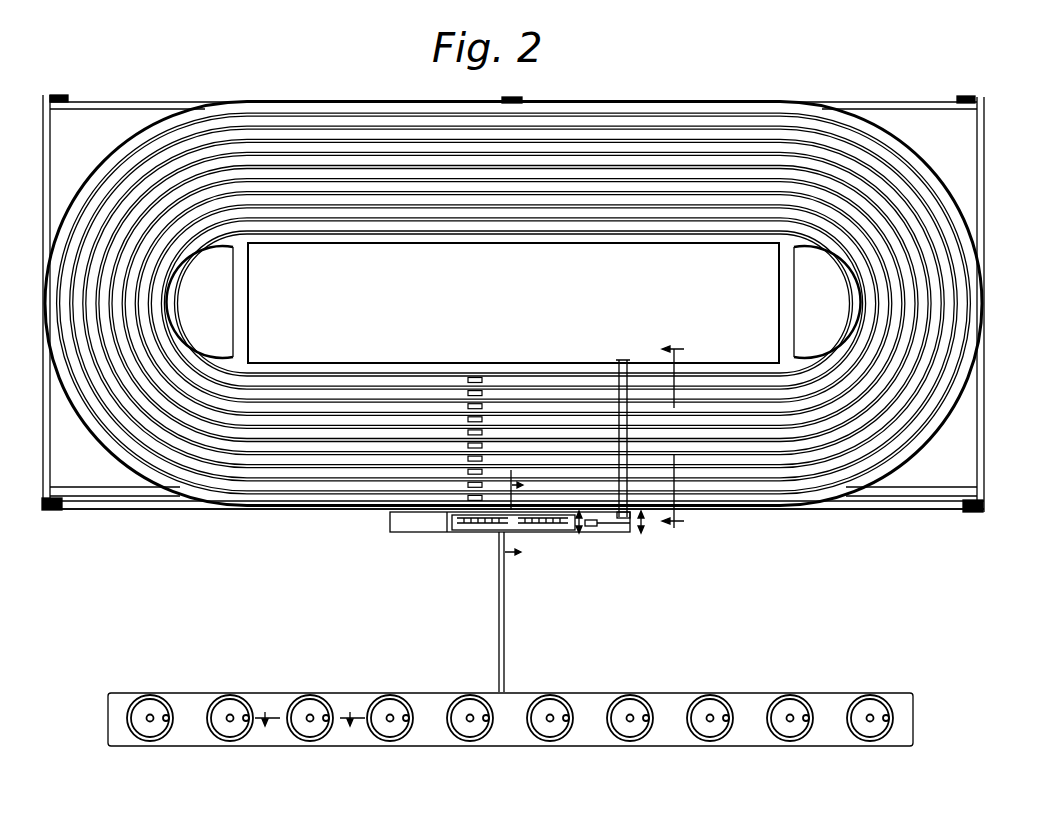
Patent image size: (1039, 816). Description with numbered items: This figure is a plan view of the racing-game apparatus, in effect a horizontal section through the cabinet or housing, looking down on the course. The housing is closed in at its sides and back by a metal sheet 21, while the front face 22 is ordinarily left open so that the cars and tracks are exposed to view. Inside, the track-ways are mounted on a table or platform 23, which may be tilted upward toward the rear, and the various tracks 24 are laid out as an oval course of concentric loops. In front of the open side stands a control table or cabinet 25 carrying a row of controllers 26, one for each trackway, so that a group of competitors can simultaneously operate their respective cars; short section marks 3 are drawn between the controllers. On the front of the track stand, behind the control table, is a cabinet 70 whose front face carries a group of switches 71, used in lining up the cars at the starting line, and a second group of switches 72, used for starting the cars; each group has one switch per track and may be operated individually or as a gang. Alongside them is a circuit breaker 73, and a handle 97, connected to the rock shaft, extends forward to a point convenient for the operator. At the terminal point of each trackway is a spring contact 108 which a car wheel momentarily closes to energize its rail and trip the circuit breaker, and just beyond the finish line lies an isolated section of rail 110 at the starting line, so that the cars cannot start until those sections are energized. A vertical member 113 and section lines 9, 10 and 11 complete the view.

The metal sheet 21 is at (726, 101).
The front face 22 is at (925, 508).
The table or platform 23 is at (360, 208).
The tracks 24 is at (500, 204).
The control table or cabinet 25 is at (662, 705).
The controllers 26 is at (152, 705).
The section line 3 is at (310, 711).
The section line 9 is at (612, 534).
The section line 10 is at (511, 522).
The section line 11 is at (676, 441).
The cabinet 70 is at (432, 534).
The group of switches 71 is at (478, 534).
The group of switches 72 is at (550, 534).
The circuit breaker 73 is at (590, 528).
The handle 97 is at (504, 540).
The spring contact 108 is at (467, 407).
The isolated section of rail 110 is at (580, 400).
The rod 113 is at (625, 360).